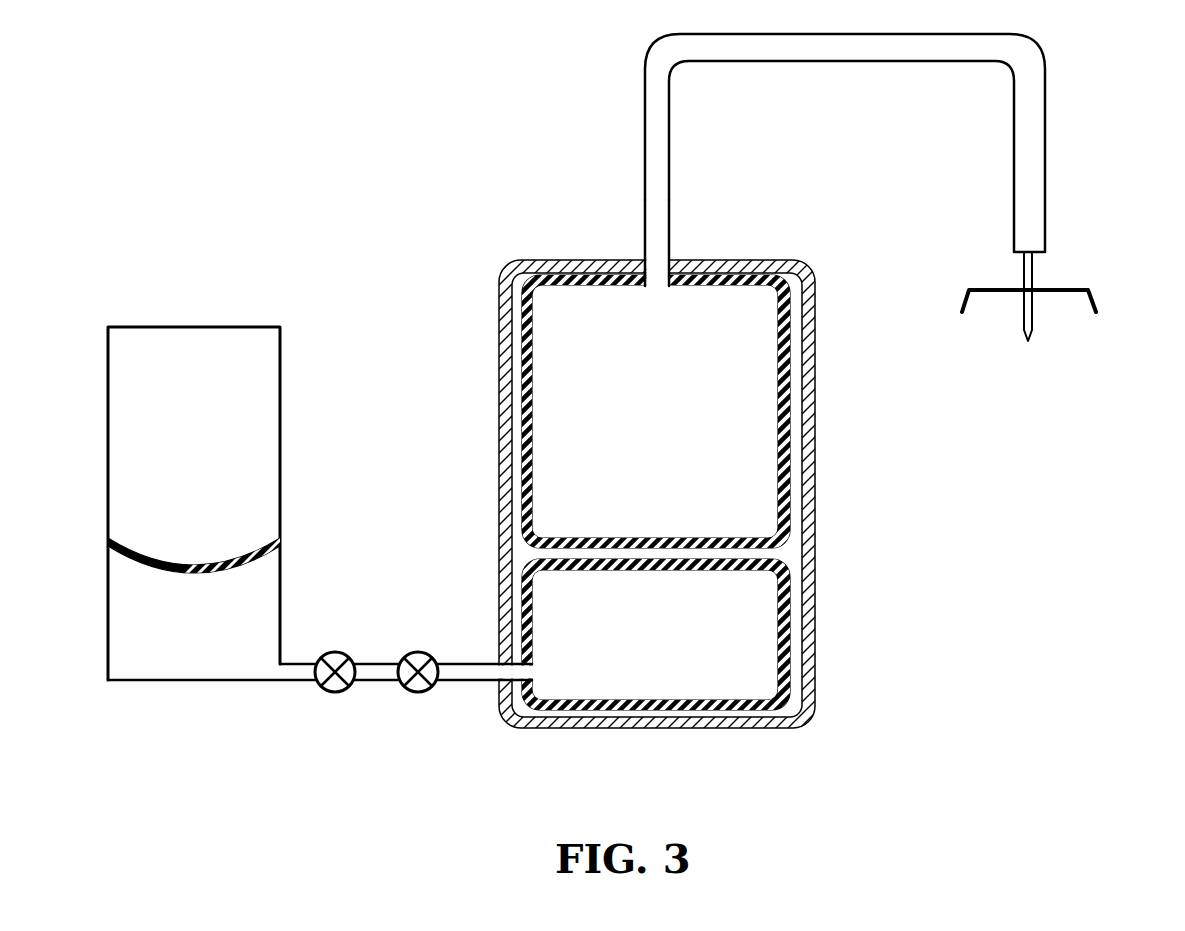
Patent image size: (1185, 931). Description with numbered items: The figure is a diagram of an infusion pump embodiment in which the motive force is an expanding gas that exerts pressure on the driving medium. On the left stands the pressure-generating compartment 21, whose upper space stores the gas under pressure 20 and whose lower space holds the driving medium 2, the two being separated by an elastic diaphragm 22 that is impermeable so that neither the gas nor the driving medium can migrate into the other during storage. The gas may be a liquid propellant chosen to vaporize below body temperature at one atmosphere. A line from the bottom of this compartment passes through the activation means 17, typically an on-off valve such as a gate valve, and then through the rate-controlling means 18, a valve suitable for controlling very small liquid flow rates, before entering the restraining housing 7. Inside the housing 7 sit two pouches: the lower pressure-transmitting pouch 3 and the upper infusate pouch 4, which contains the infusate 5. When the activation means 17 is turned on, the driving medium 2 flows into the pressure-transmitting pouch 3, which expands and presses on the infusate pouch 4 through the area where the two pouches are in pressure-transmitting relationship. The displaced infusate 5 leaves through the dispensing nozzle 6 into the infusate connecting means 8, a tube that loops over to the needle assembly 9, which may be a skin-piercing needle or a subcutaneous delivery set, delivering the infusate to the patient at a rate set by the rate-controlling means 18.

The driving medium 2 is at (254, 621).
The pressure-transmitting pouch 3 is at (790, 603).
The infusate pouch 4 is at (788, 461).
The infusate 5 is at (742, 380).
The dispensing nozzle 6 is at (672, 238).
The housing 7 is at (500, 265).
The infusate connecting means 8 is at (644, 121).
The needle assembly 9 is at (1072, 263).
The activation means 17 is at (322, 688).
The rate-controlling means 18 is at (408, 693).
The gas under pressure 20 is at (248, 440).
The pressure-generating compartment 21 is at (175, 310).
The elastic diaphragm 22 is at (253, 558).